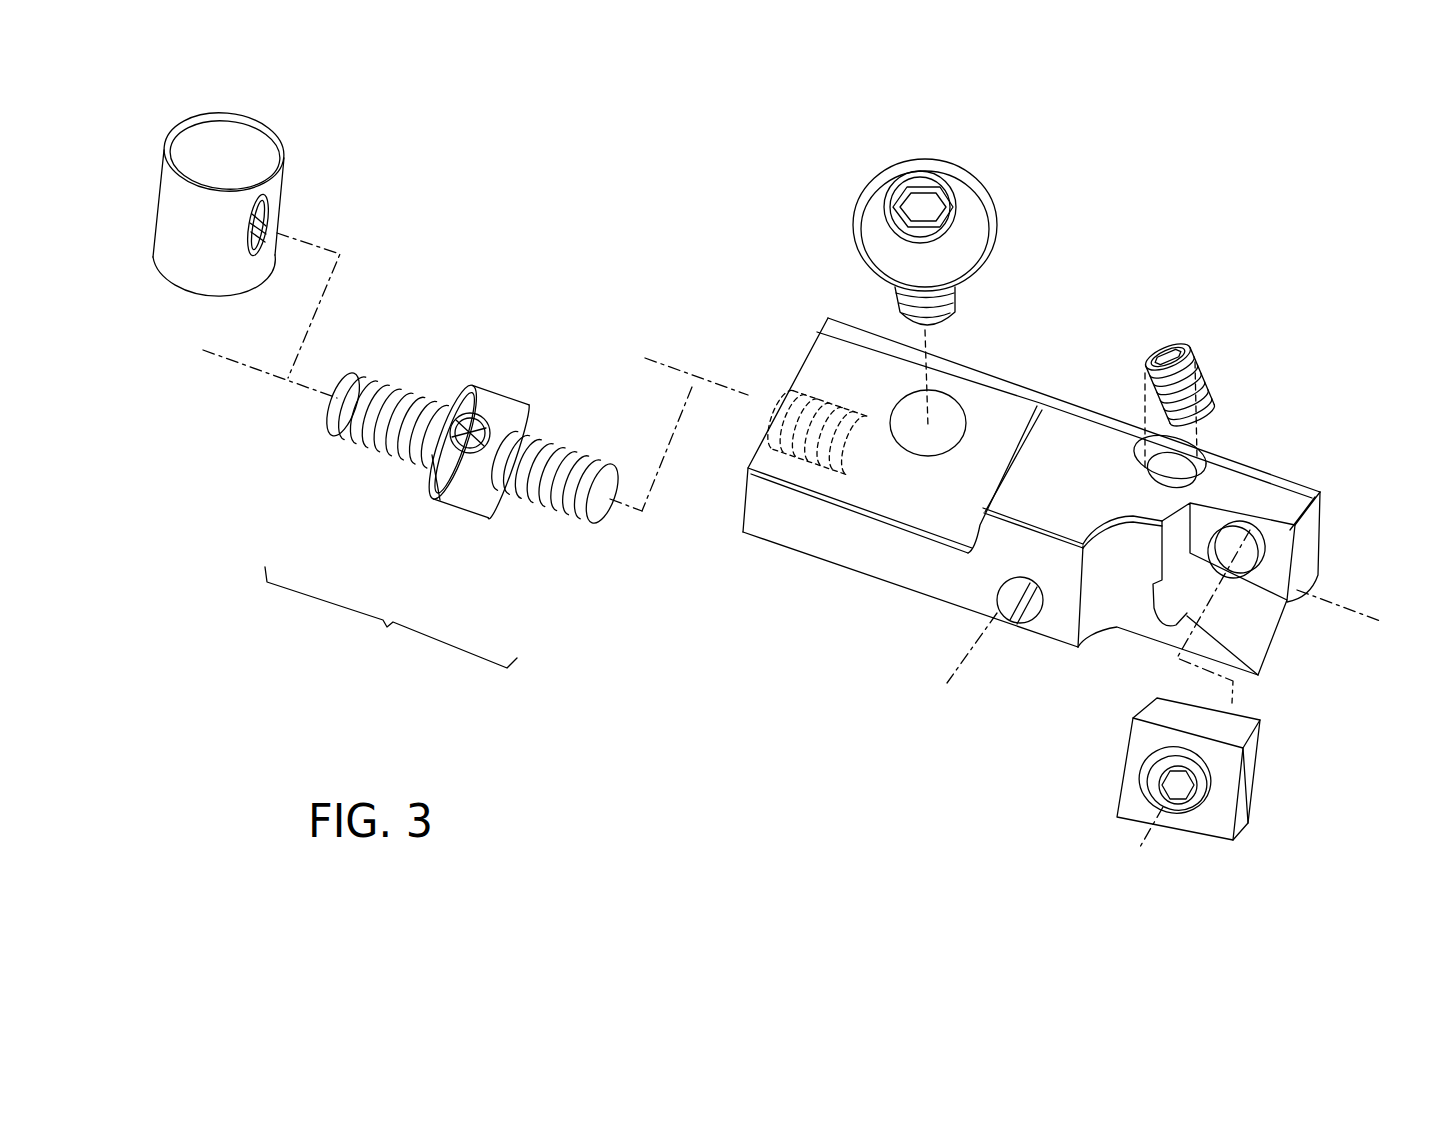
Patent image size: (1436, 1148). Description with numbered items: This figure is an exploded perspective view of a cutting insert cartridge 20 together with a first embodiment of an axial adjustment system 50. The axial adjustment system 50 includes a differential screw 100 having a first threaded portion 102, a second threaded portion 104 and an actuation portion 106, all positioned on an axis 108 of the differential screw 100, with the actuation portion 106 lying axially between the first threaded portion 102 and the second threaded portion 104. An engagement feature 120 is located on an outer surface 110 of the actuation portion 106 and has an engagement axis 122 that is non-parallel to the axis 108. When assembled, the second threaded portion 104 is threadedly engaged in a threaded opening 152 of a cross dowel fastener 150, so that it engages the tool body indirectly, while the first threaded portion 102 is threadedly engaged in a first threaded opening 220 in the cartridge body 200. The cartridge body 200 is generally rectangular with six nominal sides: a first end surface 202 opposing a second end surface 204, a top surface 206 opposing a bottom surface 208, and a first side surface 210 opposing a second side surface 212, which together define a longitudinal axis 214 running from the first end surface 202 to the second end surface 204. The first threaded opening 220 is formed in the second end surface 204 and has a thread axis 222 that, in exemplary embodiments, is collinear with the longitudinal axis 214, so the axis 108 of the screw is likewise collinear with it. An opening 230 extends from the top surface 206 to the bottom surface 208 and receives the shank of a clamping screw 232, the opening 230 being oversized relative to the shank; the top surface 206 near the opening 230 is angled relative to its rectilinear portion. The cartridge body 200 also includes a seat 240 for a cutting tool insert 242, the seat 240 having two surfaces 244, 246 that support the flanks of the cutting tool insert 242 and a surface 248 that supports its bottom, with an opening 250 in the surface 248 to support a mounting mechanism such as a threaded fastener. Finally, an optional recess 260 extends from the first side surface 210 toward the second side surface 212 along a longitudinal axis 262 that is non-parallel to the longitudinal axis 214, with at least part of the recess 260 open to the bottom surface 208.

The cutting insert cartridge 20 is at (1225, 257).
The axial adjustment system 50 is at (565, 255).
The differential screw 100 is at (372, 641).
The first threaded portion 102 is at (535, 535).
The second threaded portion 104 is at (361, 472).
The actuation portion 106 is at (439, 530).
The axis 108 is at (250, 366).
The outer surface 110 is at (495, 412).
The engagement feature 120 is at (470, 432).
The engagement axis 122 is at (462, 497).
The cross dowel fastener 150 is at (219, 248).
The threaded opening 152 is at (276, 236).
The cartridge body 200 is at (1091, 504).
The first end surface 202 is at (1312, 573).
The second end surface 204 is at (734, 494).
The top surface 206 is at (1073, 437).
The bottom surface 208 is at (900, 607).
The first side surface 210 is at (831, 533).
The second side surface 212 is at (1339, 490).
The longitudinal axis 214 is at (1368, 622).
The first threaded opening 220 is at (815, 390).
The thread axis 222 is at (672, 378).
The opening 230 is at (937, 437).
The clamping screw 232 is at (967, 230).
The seat 240 is at (1237, 617).
The cutting tool insert 242 is at (1215, 817).
The surface 244 is at (1175, 540).
The surface 246 is at (1265, 598).
The surface 248 is at (1200, 517).
The opening 250 is at (1237, 537).
The recess 260 is at (1022, 622).
The longitudinal axis 262 is at (963, 664).